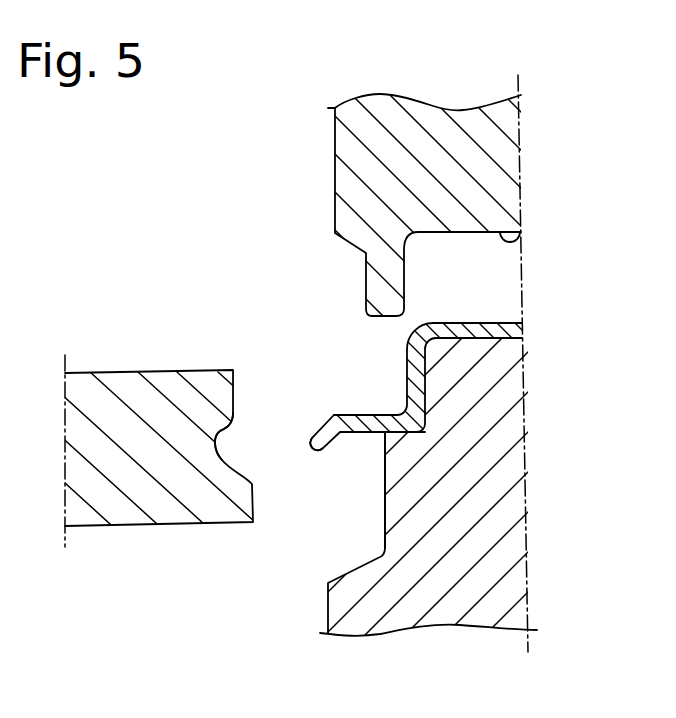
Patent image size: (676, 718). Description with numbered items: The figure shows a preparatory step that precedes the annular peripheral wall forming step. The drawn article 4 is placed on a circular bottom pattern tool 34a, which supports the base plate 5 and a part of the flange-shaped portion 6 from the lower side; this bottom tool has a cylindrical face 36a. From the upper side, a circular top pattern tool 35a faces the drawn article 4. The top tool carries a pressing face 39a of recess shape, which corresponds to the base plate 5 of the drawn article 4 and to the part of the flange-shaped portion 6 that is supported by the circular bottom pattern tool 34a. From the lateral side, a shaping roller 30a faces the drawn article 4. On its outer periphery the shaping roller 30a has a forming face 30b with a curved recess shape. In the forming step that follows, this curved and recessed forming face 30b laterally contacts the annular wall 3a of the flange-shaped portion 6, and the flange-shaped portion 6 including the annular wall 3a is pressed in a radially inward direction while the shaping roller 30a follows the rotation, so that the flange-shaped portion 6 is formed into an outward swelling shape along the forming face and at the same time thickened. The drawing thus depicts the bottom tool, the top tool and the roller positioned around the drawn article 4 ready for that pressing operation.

The circular top pattern tool 35a is at (409, 93).
The pressing face 39a is at (390, 320).
The shaping roller 30a is at (122, 372).
The forming face 30b is at (222, 431).
The circular bottom pattern tool 34a is at (425, 626).
The cylindrical face 36a is at (384, 471).
The drawn article 4 is at (488, 319).
The base plate 5 is at (454, 323).
The flange-shaped portion 6 is at (373, 412).
The annular wall 3a is at (313, 437).